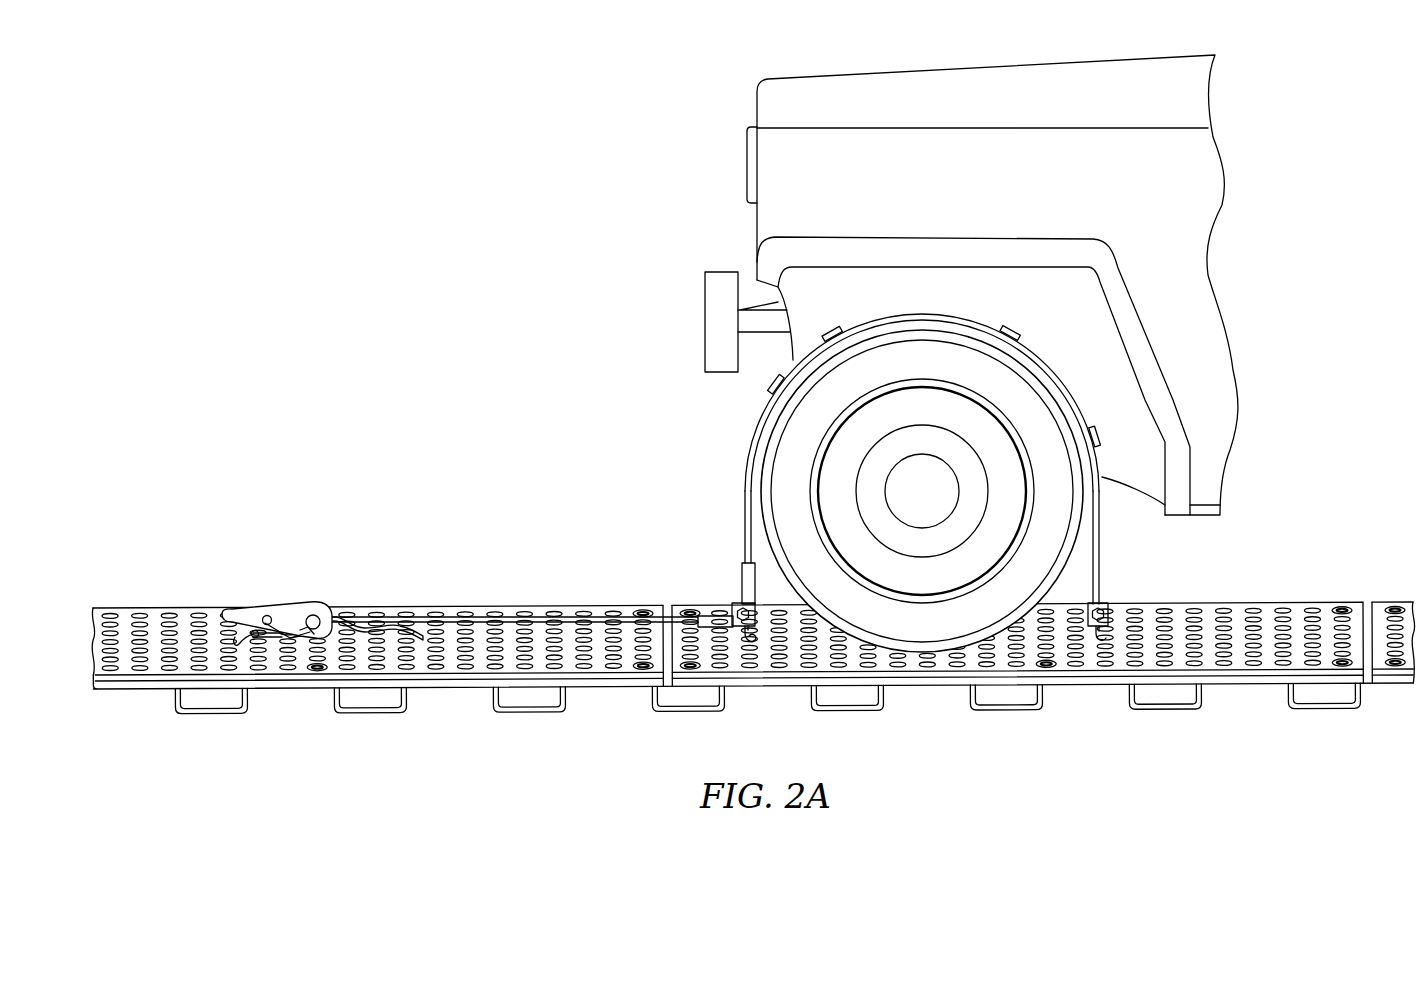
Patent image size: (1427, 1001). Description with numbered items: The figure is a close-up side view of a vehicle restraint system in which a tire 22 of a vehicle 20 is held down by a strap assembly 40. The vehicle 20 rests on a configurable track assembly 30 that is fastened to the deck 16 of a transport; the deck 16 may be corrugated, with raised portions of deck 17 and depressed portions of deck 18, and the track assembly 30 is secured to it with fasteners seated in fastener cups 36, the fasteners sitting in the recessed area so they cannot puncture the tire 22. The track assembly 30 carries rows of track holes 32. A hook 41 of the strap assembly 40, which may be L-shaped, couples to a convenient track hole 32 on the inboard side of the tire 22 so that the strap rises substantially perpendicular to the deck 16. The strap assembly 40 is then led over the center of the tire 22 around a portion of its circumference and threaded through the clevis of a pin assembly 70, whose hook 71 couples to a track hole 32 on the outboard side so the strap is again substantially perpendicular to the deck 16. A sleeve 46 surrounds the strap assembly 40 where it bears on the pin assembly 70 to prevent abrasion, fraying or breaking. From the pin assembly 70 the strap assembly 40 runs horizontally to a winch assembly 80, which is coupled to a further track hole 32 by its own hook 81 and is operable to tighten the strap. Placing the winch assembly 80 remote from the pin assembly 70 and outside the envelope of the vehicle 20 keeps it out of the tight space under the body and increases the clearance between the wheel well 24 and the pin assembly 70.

The deck 16 is at (758, 663).
The raised portions of deck 17 is at (1227, 690).
The depressed portions of deck 18 is at (1167, 714).
The vehicle 20 is at (752, 230).
The tire 22 is at (918, 656).
The wheel well 24 is at (1135, 473).
The configurable track assembly 30 is at (1238, 612).
The track hole 32 is at (1282, 610).
The fastener cup 36 is at (312, 673).
The strap assembly 40 is at (538, 617).
The hook 41 is at (1105, 630).
The sleeve 46 is at (740, 577).
The pin assembly 70 is at (737, 606).
The hook 71 is at (753, 640).
The winch assembly 80 is at (307, 603).
The hook 81 is at (237, 616).